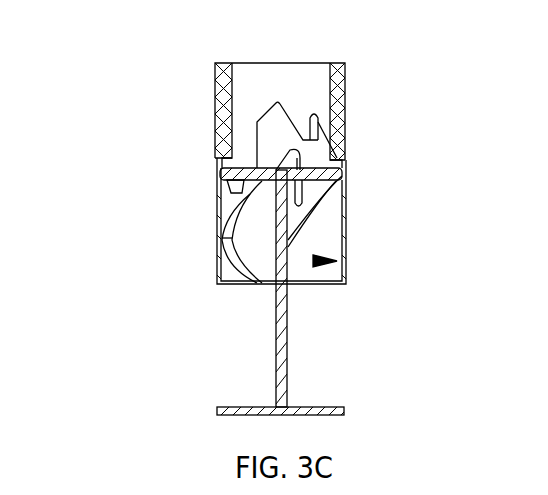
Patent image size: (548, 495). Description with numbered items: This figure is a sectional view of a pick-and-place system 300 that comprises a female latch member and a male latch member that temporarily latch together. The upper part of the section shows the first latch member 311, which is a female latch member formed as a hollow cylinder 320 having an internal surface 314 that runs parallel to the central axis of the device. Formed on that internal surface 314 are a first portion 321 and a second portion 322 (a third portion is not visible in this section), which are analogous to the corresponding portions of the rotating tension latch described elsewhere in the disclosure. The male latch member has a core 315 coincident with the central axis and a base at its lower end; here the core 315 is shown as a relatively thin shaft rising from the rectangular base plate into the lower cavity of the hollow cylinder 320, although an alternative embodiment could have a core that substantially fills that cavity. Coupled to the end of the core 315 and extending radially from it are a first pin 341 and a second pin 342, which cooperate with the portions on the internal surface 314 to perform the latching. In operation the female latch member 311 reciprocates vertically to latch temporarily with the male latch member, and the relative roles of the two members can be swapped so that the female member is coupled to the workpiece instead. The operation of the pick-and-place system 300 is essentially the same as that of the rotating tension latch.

The pick-and-place system 300 is at (142, 60).
The first latch member 311 is at (352, 130).
The internal surface 314 is at (313, 261).
The core 315 is at (280, 387).
The hollow cylinder 320 is at (343, 243).
The first portion 321 is at (290, 95).
The second portion 322 is at (252, 252).
The first pin 341 is at (345, 172).
The second pin 342 is at (240, 182).